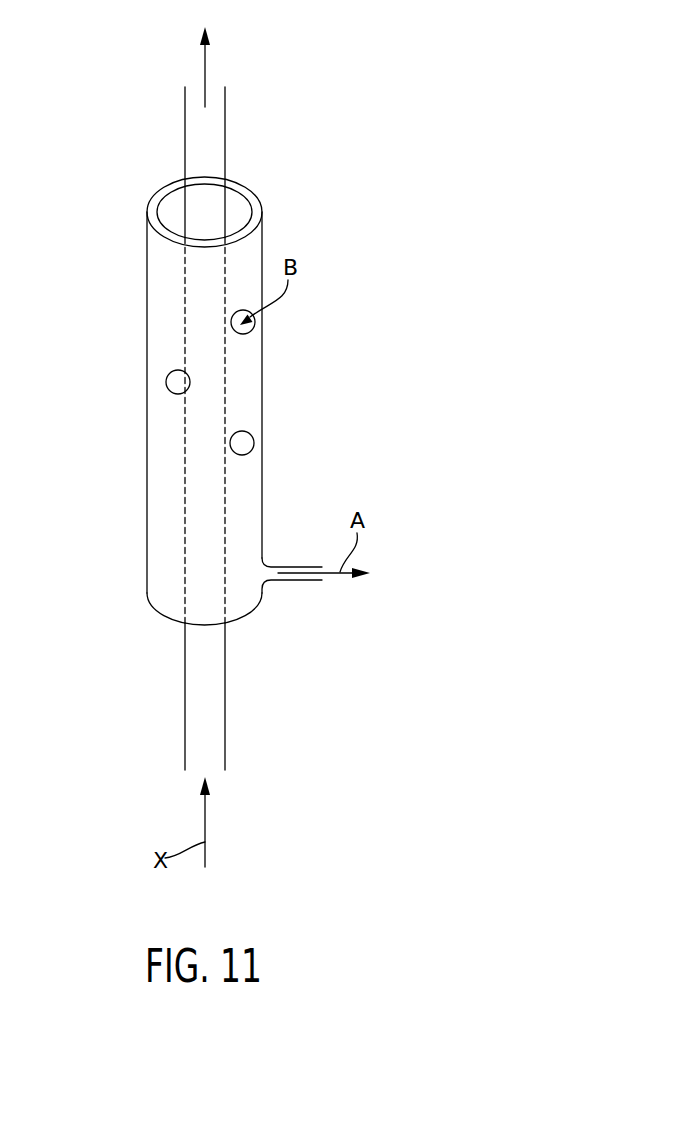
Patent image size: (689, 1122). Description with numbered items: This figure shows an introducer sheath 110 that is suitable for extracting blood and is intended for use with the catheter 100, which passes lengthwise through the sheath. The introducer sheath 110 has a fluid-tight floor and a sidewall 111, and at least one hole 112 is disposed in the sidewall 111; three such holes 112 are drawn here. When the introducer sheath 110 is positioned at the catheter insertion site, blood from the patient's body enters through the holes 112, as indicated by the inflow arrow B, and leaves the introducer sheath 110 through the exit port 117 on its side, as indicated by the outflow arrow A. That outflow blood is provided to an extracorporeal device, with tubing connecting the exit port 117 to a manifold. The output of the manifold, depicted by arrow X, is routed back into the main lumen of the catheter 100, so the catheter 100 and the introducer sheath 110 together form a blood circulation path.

The catheter 100 is at (275, 91).
The introducer sheath 110 is at (96, 359).
The sidewall 111 is at (147, 330).
The hole 112 is at (167, 387).
The exit port 117 is at (298, 565).